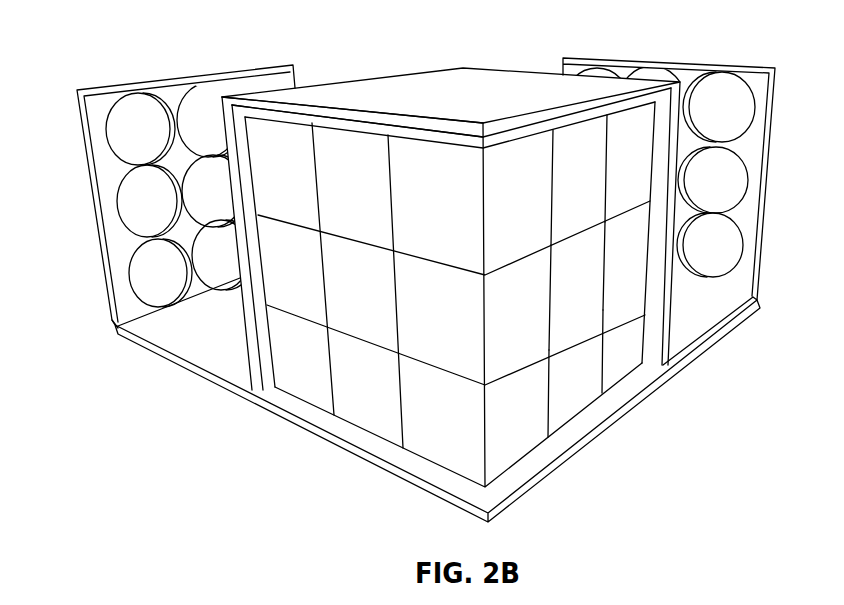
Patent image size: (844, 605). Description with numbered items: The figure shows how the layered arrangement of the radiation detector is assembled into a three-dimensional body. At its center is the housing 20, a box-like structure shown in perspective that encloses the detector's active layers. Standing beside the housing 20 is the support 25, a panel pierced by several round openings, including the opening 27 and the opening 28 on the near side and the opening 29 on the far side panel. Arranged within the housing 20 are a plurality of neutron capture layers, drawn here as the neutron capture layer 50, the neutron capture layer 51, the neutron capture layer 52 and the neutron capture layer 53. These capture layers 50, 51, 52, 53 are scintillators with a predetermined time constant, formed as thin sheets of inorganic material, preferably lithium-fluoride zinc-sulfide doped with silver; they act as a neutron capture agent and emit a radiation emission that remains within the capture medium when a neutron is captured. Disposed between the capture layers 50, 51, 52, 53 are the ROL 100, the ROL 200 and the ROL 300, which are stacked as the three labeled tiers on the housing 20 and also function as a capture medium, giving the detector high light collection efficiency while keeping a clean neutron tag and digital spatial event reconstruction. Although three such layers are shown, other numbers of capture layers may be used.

The housing 20 is at (372, 247).
The support 25 is at (156, 196).
The opening 27 is at (143, 202).
The opening 28 is at (153, 273).
The opening 29 is at (723, 238).
The neutron capture layer 50 is at (437, 467).
The neutron capture layer 51 is at (447, 373).
The neutron capture layer 52 is at (328, 233).
The neutron capture layer 53 is at (480, 141).
The ROL 100 is at (541, 417).
The ROL 200 is at (541, 319).
The ROL 300 is at (541, 220).